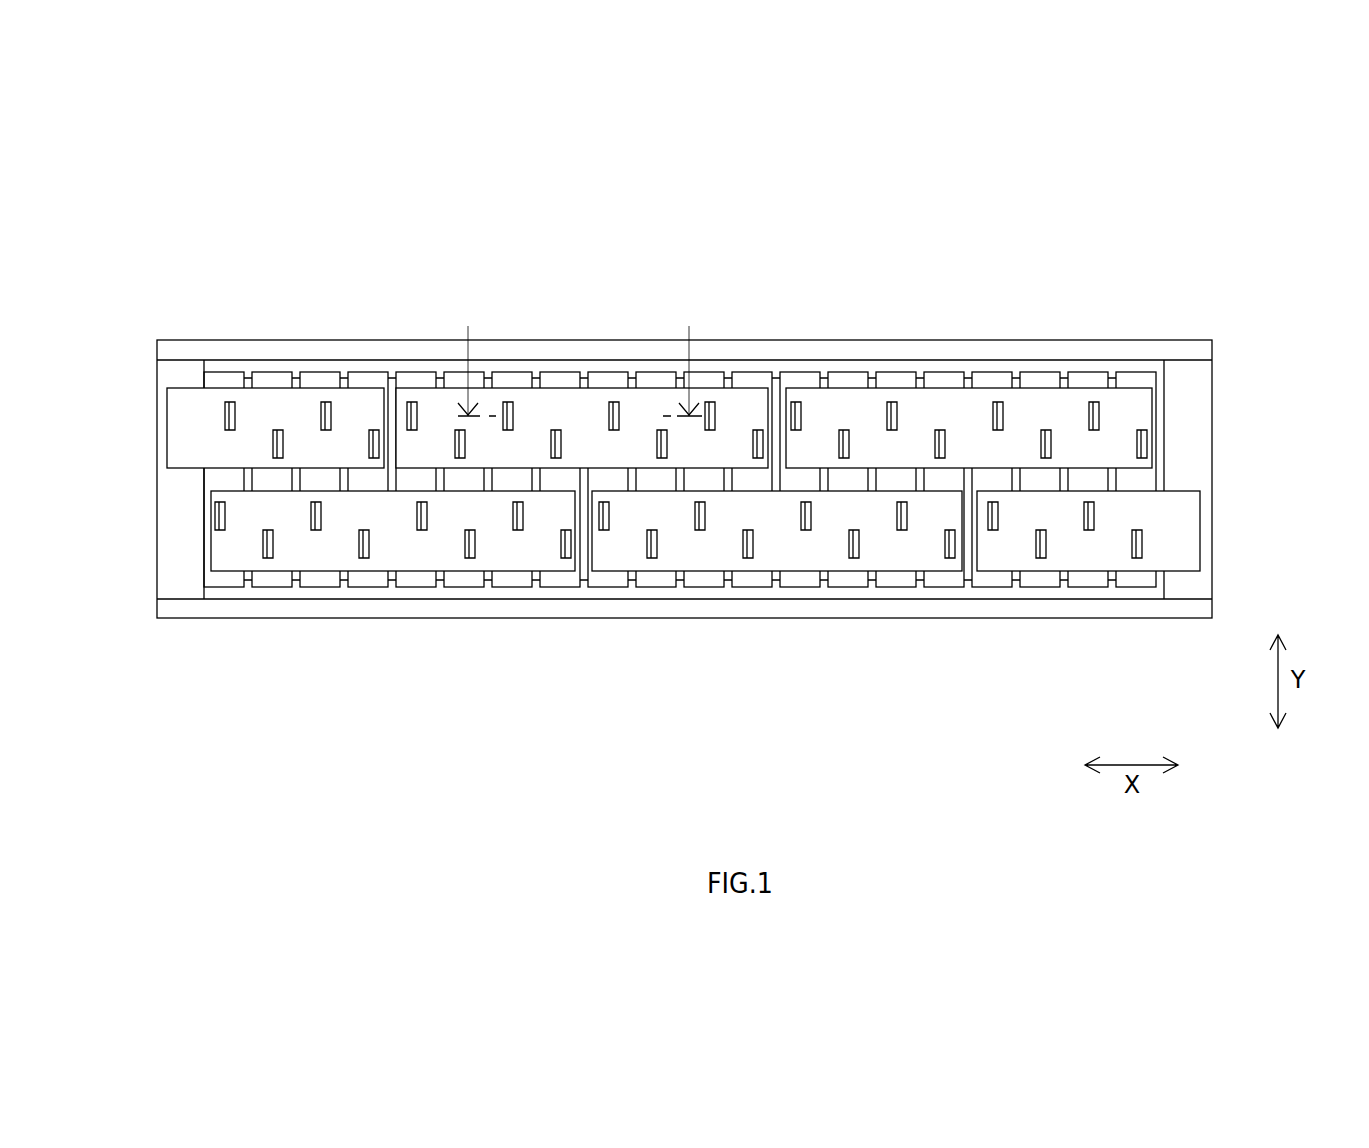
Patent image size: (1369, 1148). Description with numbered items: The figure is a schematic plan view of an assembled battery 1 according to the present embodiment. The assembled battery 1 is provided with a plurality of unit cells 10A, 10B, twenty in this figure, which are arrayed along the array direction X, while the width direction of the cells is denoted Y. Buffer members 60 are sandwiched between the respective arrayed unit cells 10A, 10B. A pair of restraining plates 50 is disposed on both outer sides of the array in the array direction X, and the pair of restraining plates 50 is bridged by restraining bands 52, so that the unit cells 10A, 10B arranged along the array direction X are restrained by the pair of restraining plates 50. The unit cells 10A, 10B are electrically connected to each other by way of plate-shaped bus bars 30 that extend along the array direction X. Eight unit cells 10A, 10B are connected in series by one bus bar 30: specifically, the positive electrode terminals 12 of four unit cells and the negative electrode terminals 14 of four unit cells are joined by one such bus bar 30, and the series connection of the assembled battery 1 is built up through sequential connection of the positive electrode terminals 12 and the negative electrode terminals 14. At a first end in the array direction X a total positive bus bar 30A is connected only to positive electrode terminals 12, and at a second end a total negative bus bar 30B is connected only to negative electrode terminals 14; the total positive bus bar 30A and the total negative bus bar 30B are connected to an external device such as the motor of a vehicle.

The assembled battery 1 is at (146, 128).
The unit cell 10A is at (216, 372).
The unit cell 10B is at (263, 373).
The positive electrode terminal 12 is at (228, 402).
The negative electrode terminal 14 is at (507, 402).
The bus bar 30 is at (701, 487).
The total positive bus bar 30A is at (229, 433).
The total negative bus bar 30B is at (1185, 540).
The restraining plate 50 is at (690, 475).
The restraining band 52 is at (957, 348).
The buffer member 60 is at (775, 580).